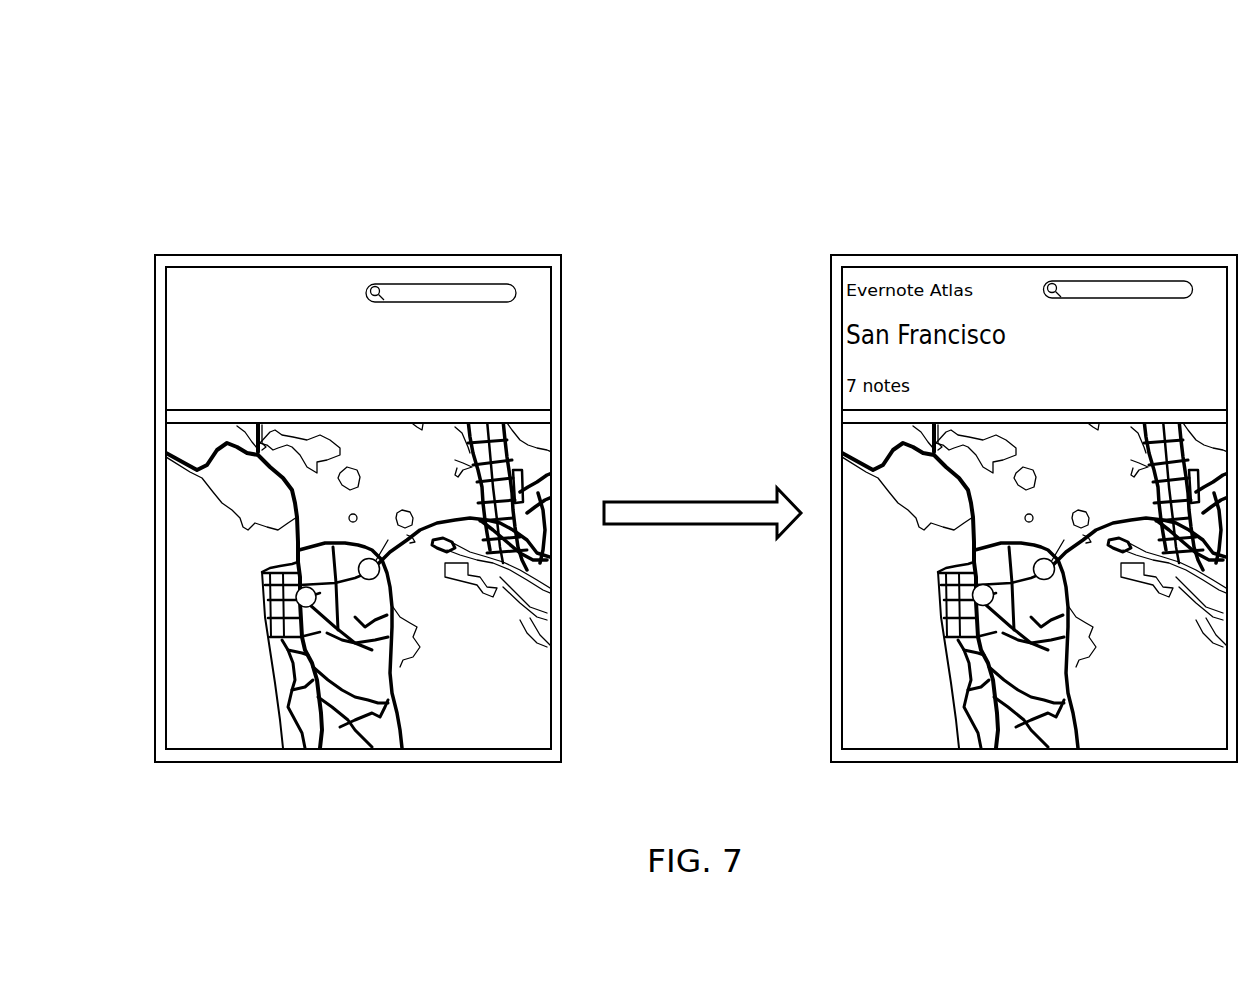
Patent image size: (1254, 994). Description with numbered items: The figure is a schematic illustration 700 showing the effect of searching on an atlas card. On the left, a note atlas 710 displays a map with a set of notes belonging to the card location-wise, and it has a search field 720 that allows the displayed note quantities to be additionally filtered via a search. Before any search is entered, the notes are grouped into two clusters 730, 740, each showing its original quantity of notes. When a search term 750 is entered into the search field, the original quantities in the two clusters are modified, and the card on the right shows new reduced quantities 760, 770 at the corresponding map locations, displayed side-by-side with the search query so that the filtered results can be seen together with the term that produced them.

The schematic illustration 700 is at (1115, 135).
The note atlas 710 is at (182, 260).
The search field 720 is at (457, 281).
The cluster 730 is at (267, 613).
The cluster 740 is at (378, 580).
The search term 750 is at (1105, 289).
The reduced quantity 760 is at (942, 615).
The reduced quantity 770 is at (1053, 580).